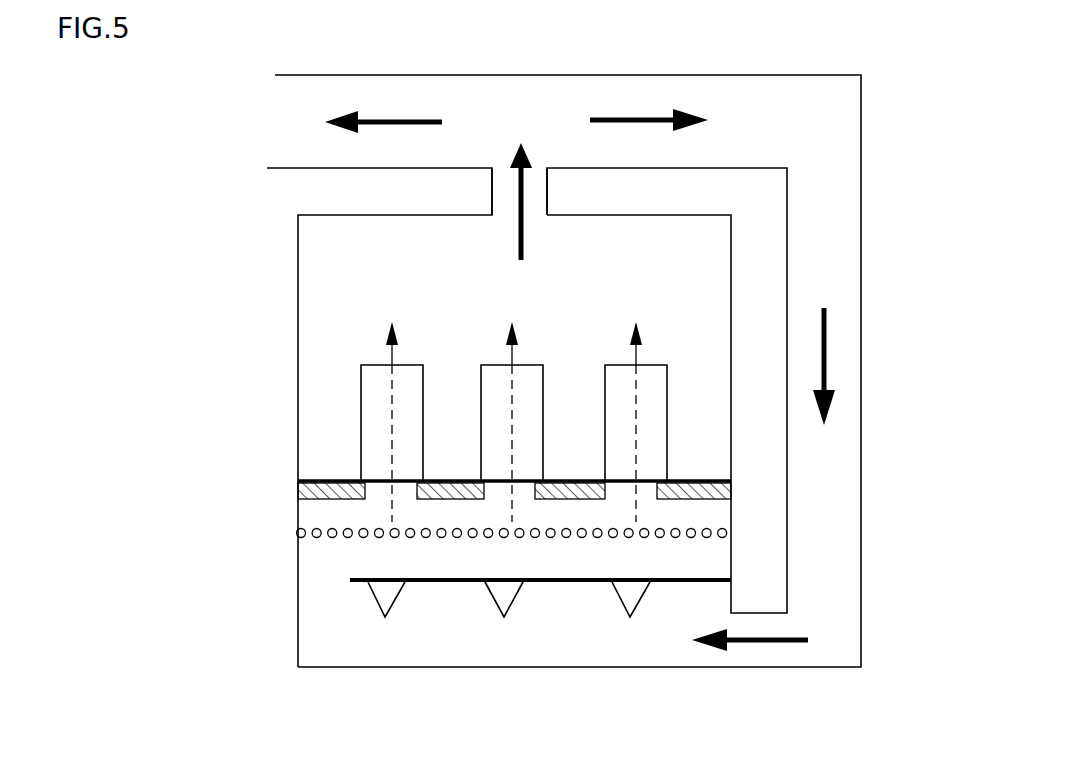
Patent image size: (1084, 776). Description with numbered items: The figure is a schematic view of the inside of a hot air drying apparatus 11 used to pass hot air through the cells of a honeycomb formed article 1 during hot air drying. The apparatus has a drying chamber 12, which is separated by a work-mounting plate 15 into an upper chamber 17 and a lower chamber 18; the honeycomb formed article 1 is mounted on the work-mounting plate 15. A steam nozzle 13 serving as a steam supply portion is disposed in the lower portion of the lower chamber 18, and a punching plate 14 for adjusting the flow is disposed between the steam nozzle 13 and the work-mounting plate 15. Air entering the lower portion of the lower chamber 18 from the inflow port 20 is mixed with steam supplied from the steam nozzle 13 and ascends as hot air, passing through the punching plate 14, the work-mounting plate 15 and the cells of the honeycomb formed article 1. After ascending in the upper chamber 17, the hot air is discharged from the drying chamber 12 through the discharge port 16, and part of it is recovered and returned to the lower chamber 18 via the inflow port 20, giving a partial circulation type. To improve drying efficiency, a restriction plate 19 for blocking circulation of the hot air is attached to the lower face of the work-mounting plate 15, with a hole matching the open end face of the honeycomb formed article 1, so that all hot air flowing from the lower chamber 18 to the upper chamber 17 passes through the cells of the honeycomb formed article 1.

The hot air drying apparatus 11 is at (958, 41).
The drying chamber 12 is at (292, 256).
The discharge port 16 is at (508, 198).
The upper chamber 17 is at (318, 316).
The honeycomb formed article 1 is at (375, 393).
The work-mounting plate 15 is at (327, 482).
The restriction plate 19 is at (300, 492).
The punching plate 14 is at (315, 542).
The steam nozzle 13 is at (386, 598).
The lower chamber 18 is at (316, 627).
The inflow port 20 is at (751, 657).